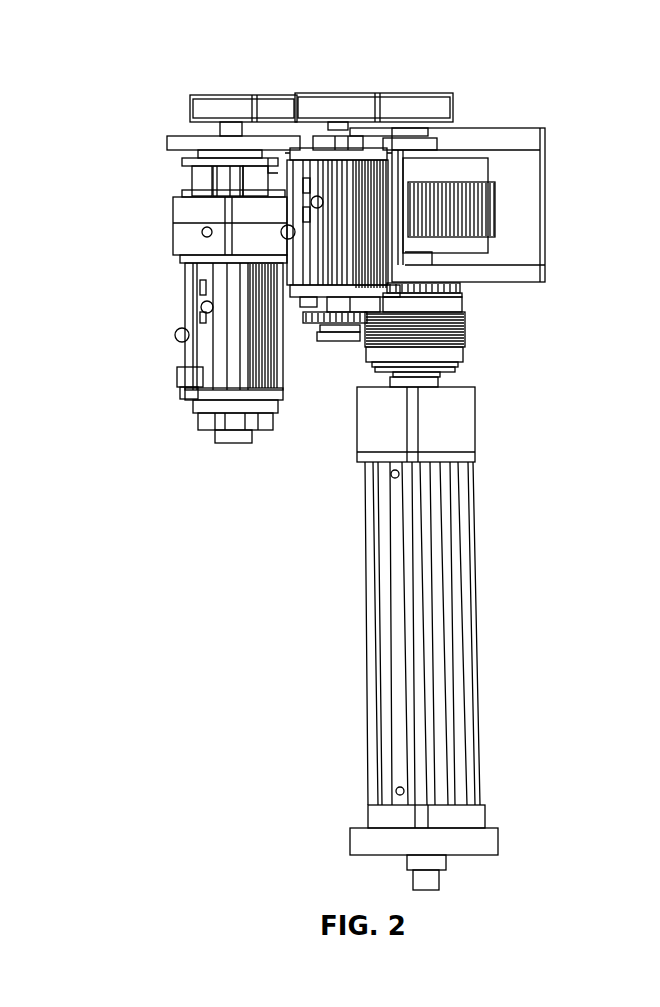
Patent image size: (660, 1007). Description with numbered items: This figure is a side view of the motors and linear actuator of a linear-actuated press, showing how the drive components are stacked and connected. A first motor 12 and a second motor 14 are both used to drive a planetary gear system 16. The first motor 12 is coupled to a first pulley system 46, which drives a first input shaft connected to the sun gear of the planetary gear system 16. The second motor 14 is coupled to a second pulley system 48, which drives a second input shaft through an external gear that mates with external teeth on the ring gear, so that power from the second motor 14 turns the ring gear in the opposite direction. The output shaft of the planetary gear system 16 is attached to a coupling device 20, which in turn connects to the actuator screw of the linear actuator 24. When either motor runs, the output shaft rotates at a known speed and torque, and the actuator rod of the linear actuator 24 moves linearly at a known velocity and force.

The first motor 12 is at (333, 343).
The second motor 14 is at (202, 436).
The planetary gear system 16 is at (556, 216).
The coupling device 20 is at (457, 353).
The linear actuator 24 is at (470, 609).
The first pulley system 46 is at (437, 108).
The second pulley system 48 is at (197, 110).